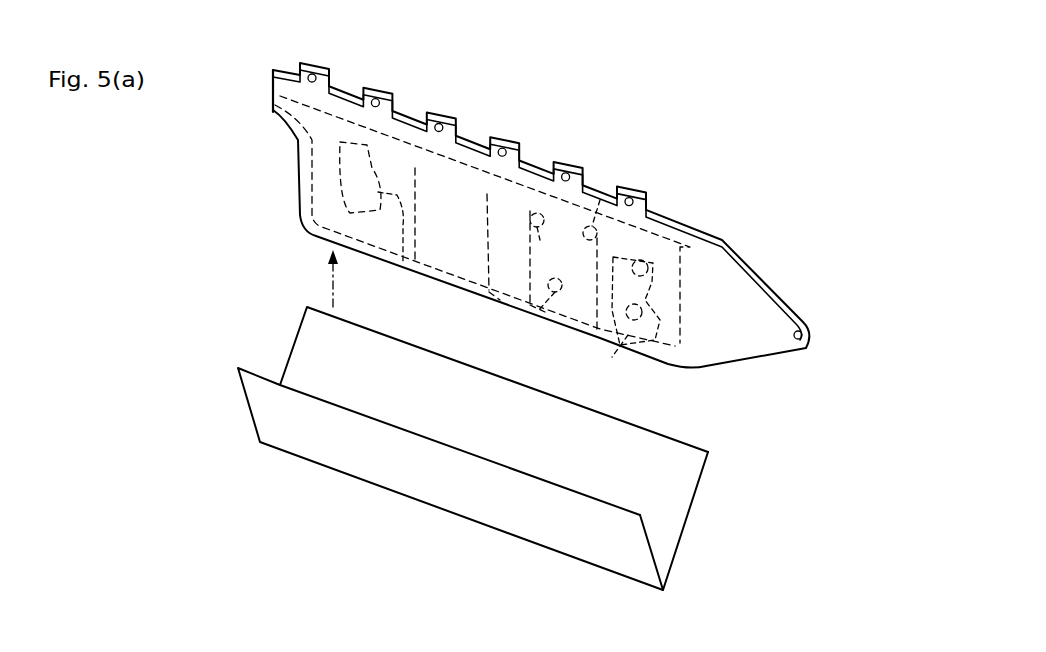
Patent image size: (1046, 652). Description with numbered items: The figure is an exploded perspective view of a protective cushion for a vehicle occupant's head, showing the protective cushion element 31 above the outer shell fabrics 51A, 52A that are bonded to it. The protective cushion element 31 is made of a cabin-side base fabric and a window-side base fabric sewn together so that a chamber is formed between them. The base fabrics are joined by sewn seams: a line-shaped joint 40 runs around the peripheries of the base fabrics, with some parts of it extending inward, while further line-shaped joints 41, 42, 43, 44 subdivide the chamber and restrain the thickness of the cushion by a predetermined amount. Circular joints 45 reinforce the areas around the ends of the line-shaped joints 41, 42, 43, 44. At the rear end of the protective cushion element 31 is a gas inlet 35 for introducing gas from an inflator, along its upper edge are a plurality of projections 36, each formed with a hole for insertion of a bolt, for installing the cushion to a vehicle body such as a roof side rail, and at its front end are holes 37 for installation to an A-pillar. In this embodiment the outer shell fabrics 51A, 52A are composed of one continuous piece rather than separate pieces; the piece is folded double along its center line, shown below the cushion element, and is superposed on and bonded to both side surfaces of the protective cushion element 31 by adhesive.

The protective cushion element 31 is at (750, 248).
The gas inlet 35 is at (268, 90).
The projections 36 is at (443, 112).
The holes 37 is at (803, 321).
The line-shaped joint 40 is at (342, 94).
The line-shaped joint 41 is at (360, 177).
The line-shaped joint 42 is at (506, 268).
The line-shaped joint 43 is at (548, 274).
The line-shaped joint 44 is at (637, 293).
The circular joints 45 is at (603, 197).
The outer shell fabric 51A is at (383, 462).
The outer shell fabric 52A is at (661, 487).